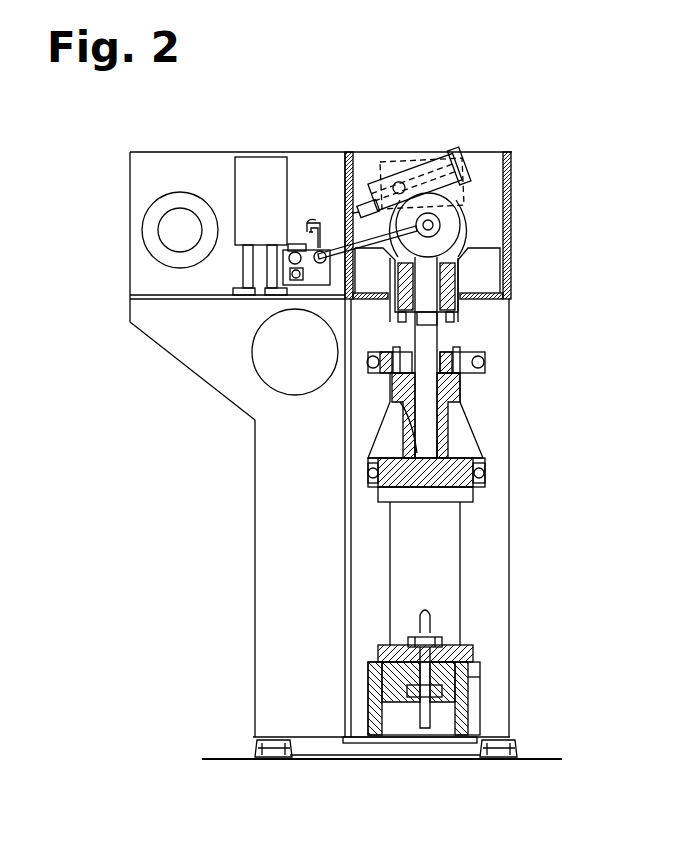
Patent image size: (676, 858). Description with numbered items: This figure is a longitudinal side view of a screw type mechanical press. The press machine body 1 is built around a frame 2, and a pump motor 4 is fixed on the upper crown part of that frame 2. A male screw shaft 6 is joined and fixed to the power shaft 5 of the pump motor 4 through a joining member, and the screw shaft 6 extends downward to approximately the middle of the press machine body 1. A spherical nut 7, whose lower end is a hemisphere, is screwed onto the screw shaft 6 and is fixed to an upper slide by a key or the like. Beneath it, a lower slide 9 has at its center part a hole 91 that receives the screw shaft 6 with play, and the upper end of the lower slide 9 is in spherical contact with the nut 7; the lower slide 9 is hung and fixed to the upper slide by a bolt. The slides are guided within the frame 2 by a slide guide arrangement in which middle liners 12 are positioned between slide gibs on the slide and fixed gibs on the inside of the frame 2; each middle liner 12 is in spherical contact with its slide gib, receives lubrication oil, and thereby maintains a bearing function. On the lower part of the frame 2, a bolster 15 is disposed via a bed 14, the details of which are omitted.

The press machine body 1 is at (456, 70).
The frame 2 is at (510, 433).
The pump motor 4 is at (470, 207).
The power shaft 5 is at (462, 272).
The male screw shaft 6 is at (425, 343).
The spherical nut 7 is at (458, 392).
The lower slide 9 is at (472, 490).
The middle liner 12 is at (485, 360).
The bed 14 is at (480, 670).
The bolster 15 is at (478, 647).
The hole 91 is at (422, 443).